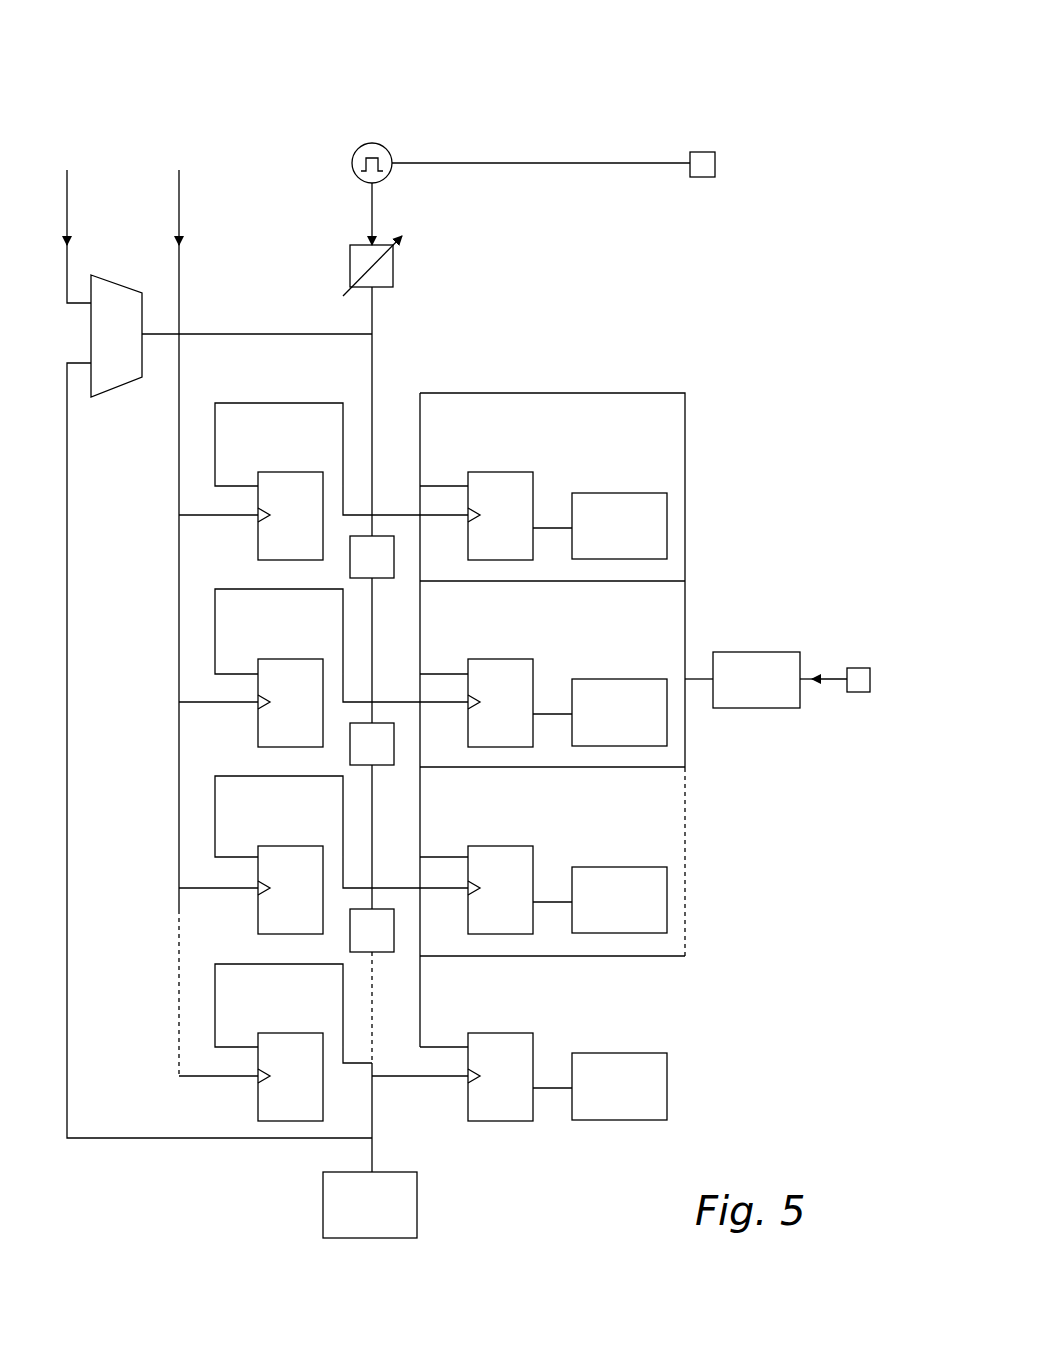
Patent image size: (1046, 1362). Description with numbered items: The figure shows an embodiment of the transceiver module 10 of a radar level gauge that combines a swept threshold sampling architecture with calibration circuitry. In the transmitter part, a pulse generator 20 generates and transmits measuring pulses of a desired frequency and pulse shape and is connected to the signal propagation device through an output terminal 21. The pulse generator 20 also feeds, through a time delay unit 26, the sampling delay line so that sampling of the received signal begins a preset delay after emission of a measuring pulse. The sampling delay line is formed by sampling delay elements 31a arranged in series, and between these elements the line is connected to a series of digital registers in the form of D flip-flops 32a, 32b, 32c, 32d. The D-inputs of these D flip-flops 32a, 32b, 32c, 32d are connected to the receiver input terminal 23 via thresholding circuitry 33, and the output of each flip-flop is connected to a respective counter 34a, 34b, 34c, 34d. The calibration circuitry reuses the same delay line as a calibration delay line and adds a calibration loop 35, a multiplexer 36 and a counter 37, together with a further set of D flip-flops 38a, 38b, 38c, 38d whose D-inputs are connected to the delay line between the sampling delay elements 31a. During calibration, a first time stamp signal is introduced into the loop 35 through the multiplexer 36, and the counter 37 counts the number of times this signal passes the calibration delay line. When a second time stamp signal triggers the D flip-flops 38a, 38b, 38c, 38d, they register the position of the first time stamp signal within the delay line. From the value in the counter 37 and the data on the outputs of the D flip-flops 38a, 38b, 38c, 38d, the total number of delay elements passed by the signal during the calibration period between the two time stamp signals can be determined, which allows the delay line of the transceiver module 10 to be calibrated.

The transceiver module 10 is at (565, 85).
The pulse generator 20 is at (392, 170).
The output terminal 21 is at (705, 150).
The input terminal 23 is at (857, 668).
The time delay unit 26 is at (395, 286).
The sampling delay element 31a is at (395, 562).
The D flip-flop 32a is at (480, 472).
The D flip-flop 32b is at (480, 659).
The D flip-flop 32c is at (480, 846).
The D flip-flop 32d is at (480, 1033).
The thresholding circuitry 33 is at (758, 652).
The counter 34a is at (612, 493).
The counter 34b is at (612, 679).
The counter 34c is at (612, 867).
The counter 34d is at (612, 1053).
The calibration loop 35 is at (200, 1142).
The multiplexer 36 is at (118, 300).
The counter 37 is at (418, 1218).
The D flip-flop 38a is at (270, 472).
The D flip-flop 38b is at (270, 659).
The D flip-flop 38c is at (270, 846).
The D flip-flop 38d is at (270, 1033).